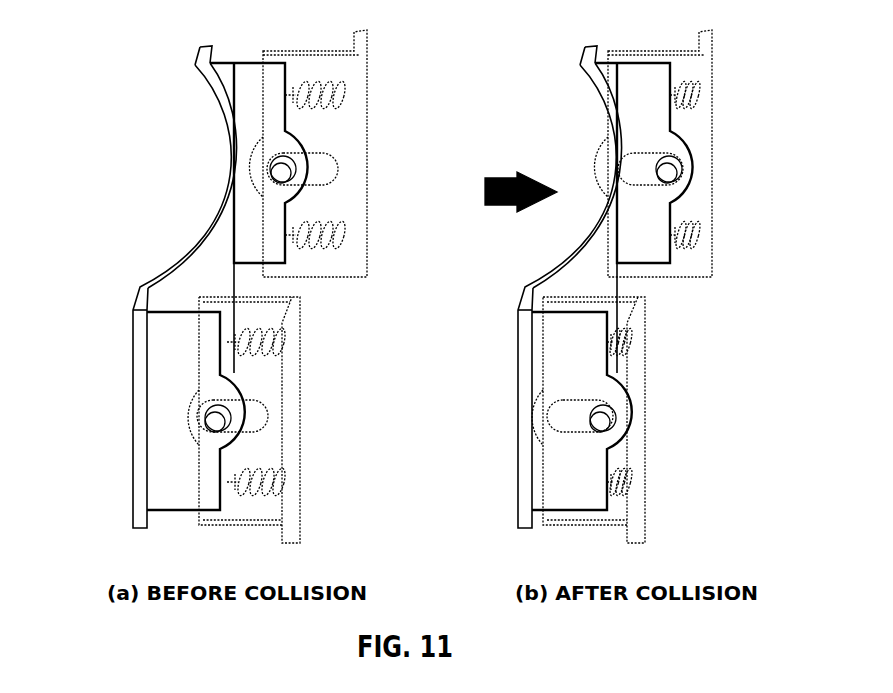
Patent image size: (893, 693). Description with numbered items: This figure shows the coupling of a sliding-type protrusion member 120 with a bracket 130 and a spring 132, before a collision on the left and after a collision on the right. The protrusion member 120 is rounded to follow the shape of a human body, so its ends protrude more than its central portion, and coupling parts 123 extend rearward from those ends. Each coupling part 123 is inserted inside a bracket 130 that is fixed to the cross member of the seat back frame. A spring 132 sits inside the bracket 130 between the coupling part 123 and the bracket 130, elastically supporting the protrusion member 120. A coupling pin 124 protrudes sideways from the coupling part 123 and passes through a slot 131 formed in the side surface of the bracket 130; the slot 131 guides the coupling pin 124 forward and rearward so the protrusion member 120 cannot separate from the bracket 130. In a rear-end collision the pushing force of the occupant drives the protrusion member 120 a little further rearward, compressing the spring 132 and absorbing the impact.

The sliding-type protrusion member 120 is at (175, 262).
The coupling part 123 is at (157, 462).
The coupling pin 124 is at (220, 422).
The bracket 130 is at (268, 508).
The slot 131 is at (252, 405).
The spring 132 is at (272, 477).